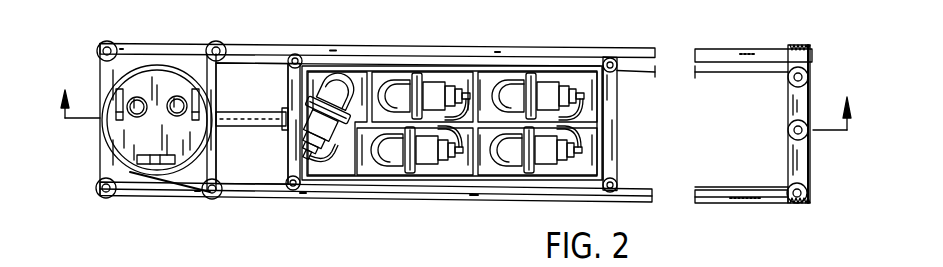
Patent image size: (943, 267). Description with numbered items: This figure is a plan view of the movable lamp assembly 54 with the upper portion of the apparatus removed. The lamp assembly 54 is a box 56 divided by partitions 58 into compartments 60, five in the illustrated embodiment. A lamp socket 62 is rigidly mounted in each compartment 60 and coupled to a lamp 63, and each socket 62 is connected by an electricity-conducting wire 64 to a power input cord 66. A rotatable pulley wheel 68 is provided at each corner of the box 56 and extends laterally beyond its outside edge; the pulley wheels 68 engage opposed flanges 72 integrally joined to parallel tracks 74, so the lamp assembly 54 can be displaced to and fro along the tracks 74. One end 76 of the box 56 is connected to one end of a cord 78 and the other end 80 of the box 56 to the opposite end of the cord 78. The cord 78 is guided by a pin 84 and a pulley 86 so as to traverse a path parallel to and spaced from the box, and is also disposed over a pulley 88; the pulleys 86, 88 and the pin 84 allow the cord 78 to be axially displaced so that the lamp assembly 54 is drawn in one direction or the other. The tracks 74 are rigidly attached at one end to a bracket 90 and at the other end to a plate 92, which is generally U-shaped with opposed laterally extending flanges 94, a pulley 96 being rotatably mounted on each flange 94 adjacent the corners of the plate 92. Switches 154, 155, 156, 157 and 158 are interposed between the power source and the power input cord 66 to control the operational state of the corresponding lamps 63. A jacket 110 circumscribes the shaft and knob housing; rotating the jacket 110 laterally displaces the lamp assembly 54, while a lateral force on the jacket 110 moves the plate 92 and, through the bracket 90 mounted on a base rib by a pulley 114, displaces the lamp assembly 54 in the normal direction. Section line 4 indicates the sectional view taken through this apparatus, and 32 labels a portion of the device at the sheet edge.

The section line 4- 4 is at (453, 99).
The lighting fixture 32 is at (847, 257).
The movable lamp assembly 54 is at (440, 63).
The box 56 is at (452, 92).
The partitions 58 is at (452, 97).
The compartments 60 is at (443, 128).
The lamp socket 62 is at (434, 138).
The lamp 63 is at (424, 118).
The electricity-conducting wire 64 is at (619, 124).
The power input cord 66 is at (252, 100).
The pulley wheel 68 is at (458, 124).
The flanges 72 is at (741, 127).
The tracks 74 is at (753, 128).
The one end of the box 76 is at (265, 124).
The cord 78 is at (252, 133).
The other end of the box 80 is at (643, 123).
The pin 84 is at (204, 212).
The pulley 86 is at (796, 221).
The pulley 88 is at (826, 122).
The bracket 90 is at (817, 25).
The plate 92 is at (141, 134).
The flanges 94 is at (377, 120).
The pulley 96 is at (152, 119).
The jacket 110 is at (121, 120).
The pulley 114 is at (823, 135).
The switch 154 is at (97, 74).
The switch 155 is at (177, 115).
The switch 156 is at (197, 121).
The switch 157 is at (70, 120).
The switch 158 is at (106, 178).